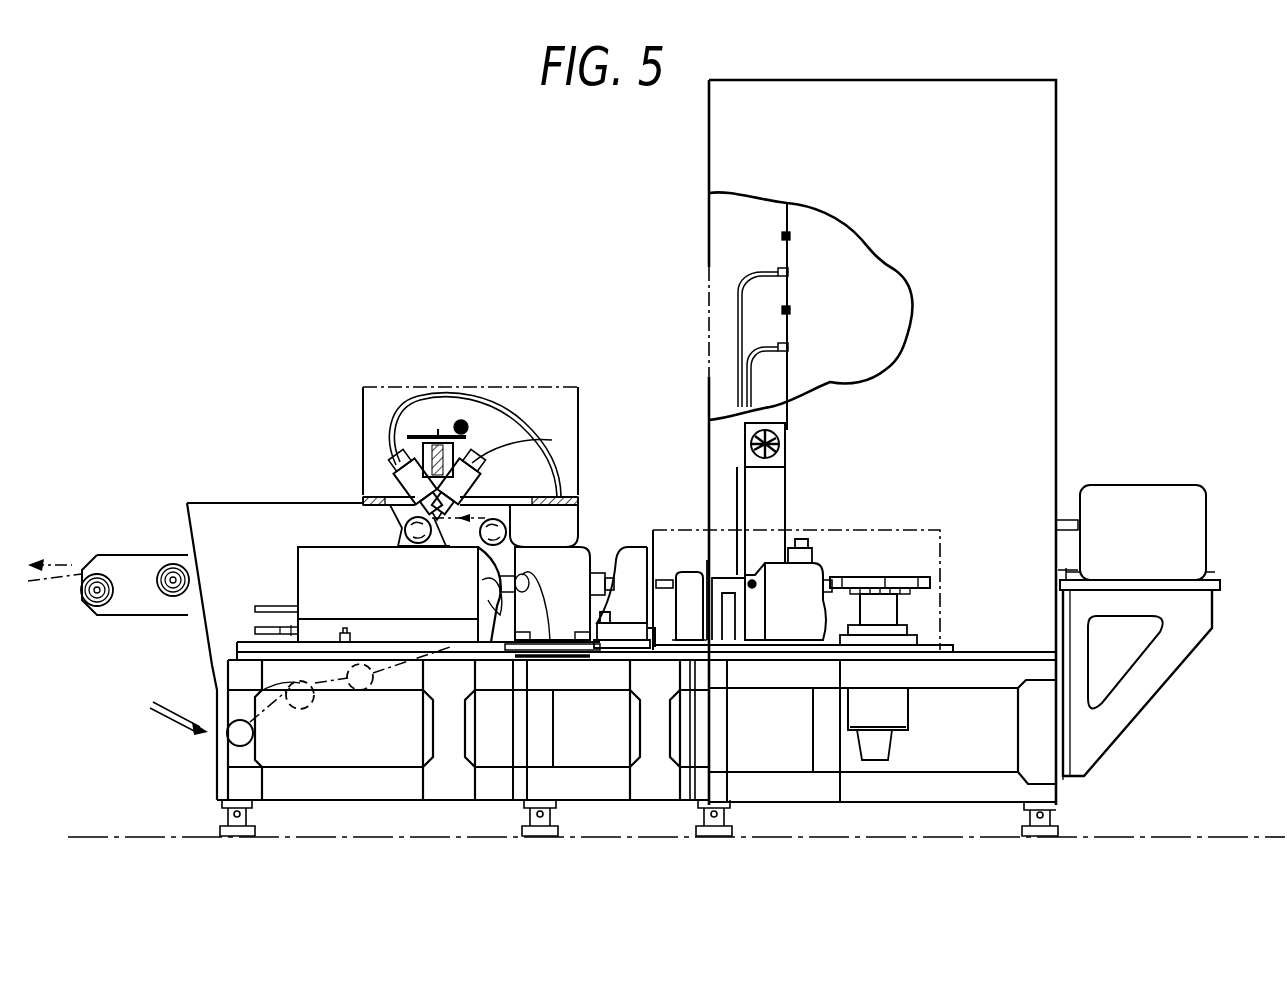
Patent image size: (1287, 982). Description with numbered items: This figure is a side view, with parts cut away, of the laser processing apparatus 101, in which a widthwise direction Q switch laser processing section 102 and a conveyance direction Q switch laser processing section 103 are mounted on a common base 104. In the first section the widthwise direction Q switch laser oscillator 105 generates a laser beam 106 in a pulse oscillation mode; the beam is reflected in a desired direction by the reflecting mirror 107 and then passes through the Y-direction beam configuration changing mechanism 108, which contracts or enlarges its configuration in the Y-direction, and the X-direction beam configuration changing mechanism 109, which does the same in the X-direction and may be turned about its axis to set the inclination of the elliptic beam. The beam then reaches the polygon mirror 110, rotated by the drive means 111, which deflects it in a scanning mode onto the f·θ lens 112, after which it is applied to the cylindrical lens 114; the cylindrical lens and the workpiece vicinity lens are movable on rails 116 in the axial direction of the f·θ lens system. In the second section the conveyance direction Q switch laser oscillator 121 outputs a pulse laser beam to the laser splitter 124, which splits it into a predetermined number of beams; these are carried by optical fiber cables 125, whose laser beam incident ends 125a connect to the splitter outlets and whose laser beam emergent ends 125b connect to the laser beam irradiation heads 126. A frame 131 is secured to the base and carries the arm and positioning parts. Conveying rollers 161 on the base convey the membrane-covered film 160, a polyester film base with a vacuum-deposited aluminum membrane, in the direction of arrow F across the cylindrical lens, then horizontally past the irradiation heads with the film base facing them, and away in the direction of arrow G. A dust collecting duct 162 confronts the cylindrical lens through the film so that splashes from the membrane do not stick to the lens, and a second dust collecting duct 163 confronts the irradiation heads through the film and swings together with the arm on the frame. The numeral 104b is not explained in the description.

The laser processing apparatus 101 is at (578, 256).
The widthwise direction Q switch laser processing section 102 is at (822, 522).
The conveyance direction Q switch laser processing section 103 is at (1066, 386).
The base 104 is at (972, 785).
The pivot point 104b is at (459, 421).
The widthwise direction Q switch laser oscillator 105 is at (303, 573).
The laser beam 106 is at (812, 652).
The reflecting mirror 107 is at (668, 560).
The Y-direction beam configuration changing mechanism 108 is at (712, 568).
The X-direction beam configuration changing mechanism 109 is at (780, 578).
The polygon mirror 110 is at (912, 586).
The drive means 111 is at (880, 716).
The f·θ lens 112 is at (808, 565).
The cylindrical lens 114 is at (548, 660).
The rails 116 is at (555, 662).
The conveyance direction Q switch laser oscillator 121 is at (1110, 500).
The laser splitter 124 is at (784, 238).
The optical fiber cables 125 is at (745, 314).
The laser beam incident ends 125a is at (780, 272).
The laser beam emergent ends 125b is at (398, 458).
The laser beam irradiation heads 126 is at (400, 472).
The frame 131 is at (425, 480).
The membrane-covered film 160 is at (226, 736).
The conveying rollers 161 is at (432, 548).
The dust collecting duct 162 is at (420, 642).
The dust collecting duct 163 is at (398, 540).
The arrow F is at (172, 716).
The arrow G is at (60, 562).